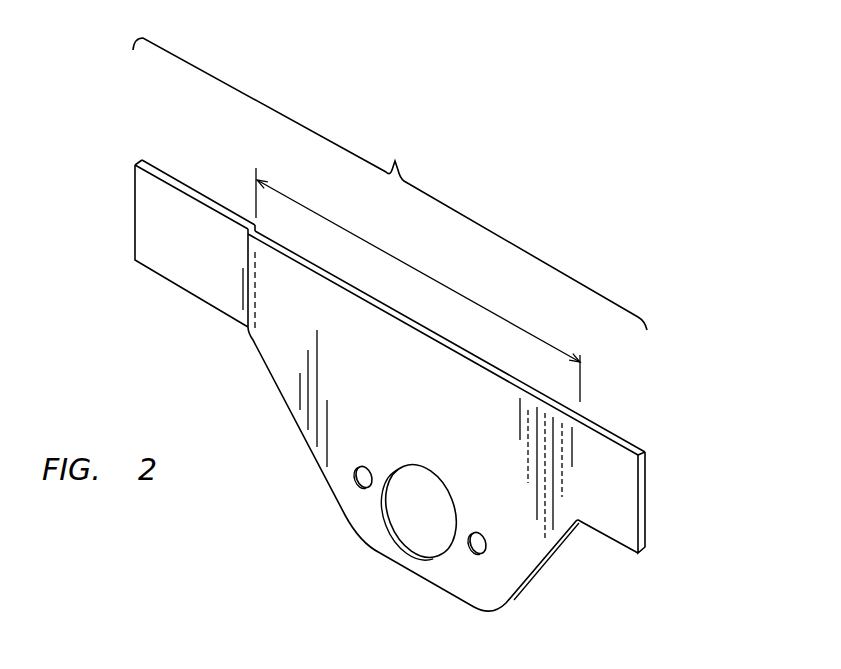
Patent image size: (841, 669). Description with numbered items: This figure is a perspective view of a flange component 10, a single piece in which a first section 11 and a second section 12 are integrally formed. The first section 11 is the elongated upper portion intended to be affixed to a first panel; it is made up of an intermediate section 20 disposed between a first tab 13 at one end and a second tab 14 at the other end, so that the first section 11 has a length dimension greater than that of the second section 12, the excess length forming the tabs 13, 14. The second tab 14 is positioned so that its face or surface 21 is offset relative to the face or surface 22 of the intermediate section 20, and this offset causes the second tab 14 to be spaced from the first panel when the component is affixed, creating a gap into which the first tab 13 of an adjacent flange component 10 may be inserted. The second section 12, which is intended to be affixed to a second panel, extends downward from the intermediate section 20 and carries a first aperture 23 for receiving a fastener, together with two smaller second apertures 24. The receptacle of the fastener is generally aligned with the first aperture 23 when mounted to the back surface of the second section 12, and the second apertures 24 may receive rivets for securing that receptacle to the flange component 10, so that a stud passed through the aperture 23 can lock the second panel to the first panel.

The flange component 10 is at (640, 405).
The first section 11 is at (395, 161).
The second section 12 is at (503, 580).
The first tab 13 is at (615, 500).
The second tab 14 is at (182, 267).
The intermediate section 20 is at (420, 270).
The surface of the second tab 21 is at (190, 232).
The surface of the component 22 is at (407, 386).
The first aperture 23 is at (393, 527).
The second apertures 24 is at (357, 480).